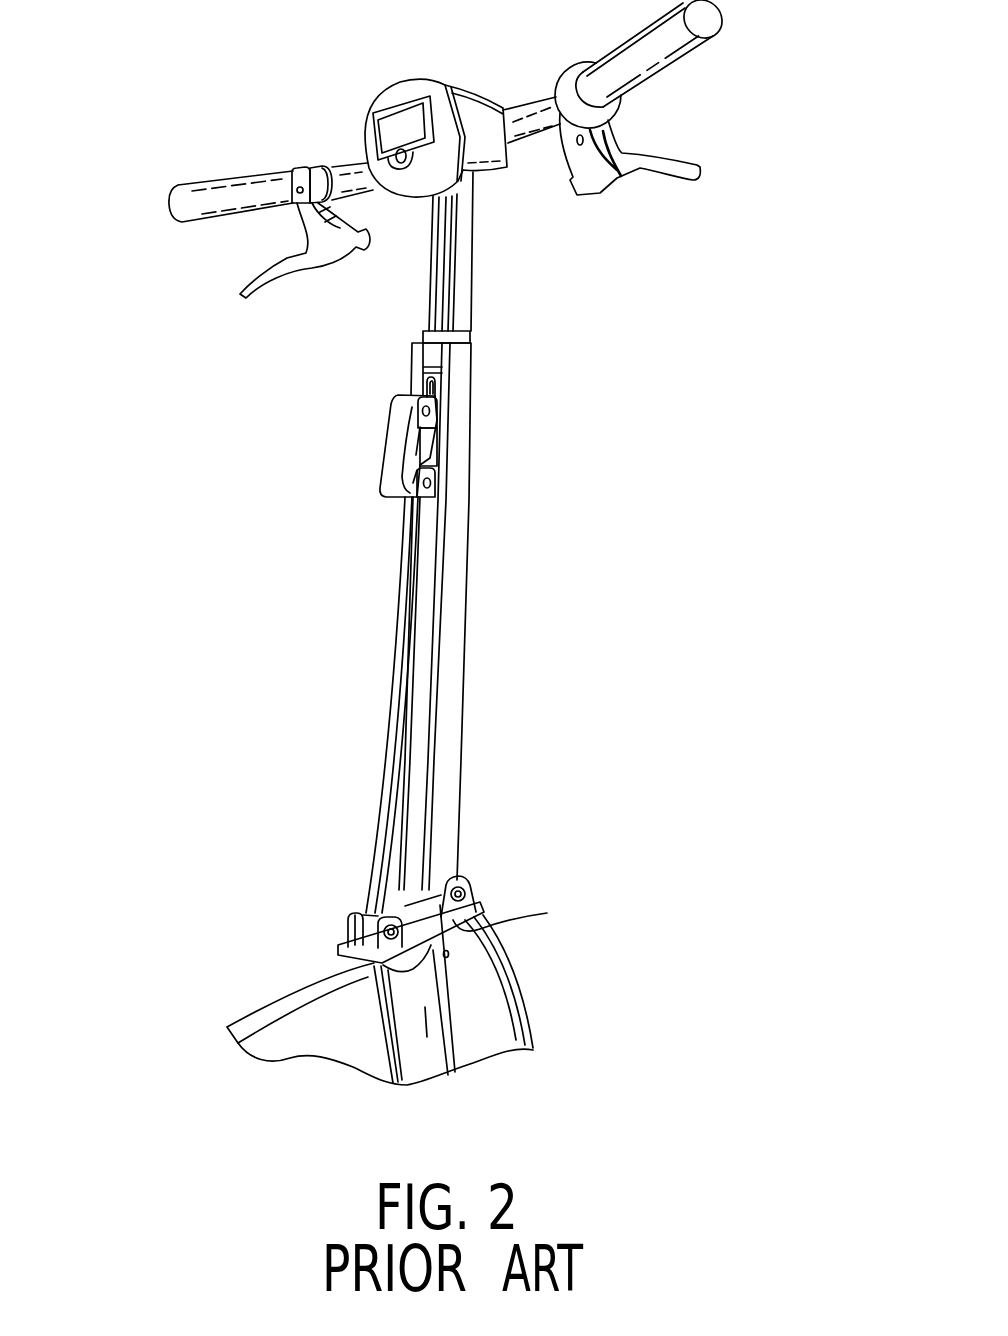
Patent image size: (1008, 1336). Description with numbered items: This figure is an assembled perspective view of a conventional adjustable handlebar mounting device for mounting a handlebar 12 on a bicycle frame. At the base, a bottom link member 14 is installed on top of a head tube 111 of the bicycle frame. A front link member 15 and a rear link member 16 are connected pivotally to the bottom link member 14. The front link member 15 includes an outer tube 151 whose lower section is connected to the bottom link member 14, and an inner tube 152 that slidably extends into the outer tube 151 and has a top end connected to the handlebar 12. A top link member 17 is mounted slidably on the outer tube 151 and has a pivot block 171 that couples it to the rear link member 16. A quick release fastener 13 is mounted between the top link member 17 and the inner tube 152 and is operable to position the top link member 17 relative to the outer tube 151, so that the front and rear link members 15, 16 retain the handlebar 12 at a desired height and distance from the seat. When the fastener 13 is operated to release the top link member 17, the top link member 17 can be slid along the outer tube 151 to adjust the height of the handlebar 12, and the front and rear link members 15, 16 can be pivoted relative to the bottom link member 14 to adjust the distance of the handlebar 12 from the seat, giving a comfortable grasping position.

The handlebar 12 is at (232, 182).
The inner tube 152 is at (466, 269).
The front link member 15 is at (465, 641).
The outer tube 151 is at (445, 773).
The top link member 17 is at (434, 383).
The pivot block 171 is at (437, 448).
The quick release fastener 13 is at (386, 443).
The rear link member 16 is at (386, 710).
The bottom link member 14 is at (450, 921).
The head tube 111 is at (497, 1007).